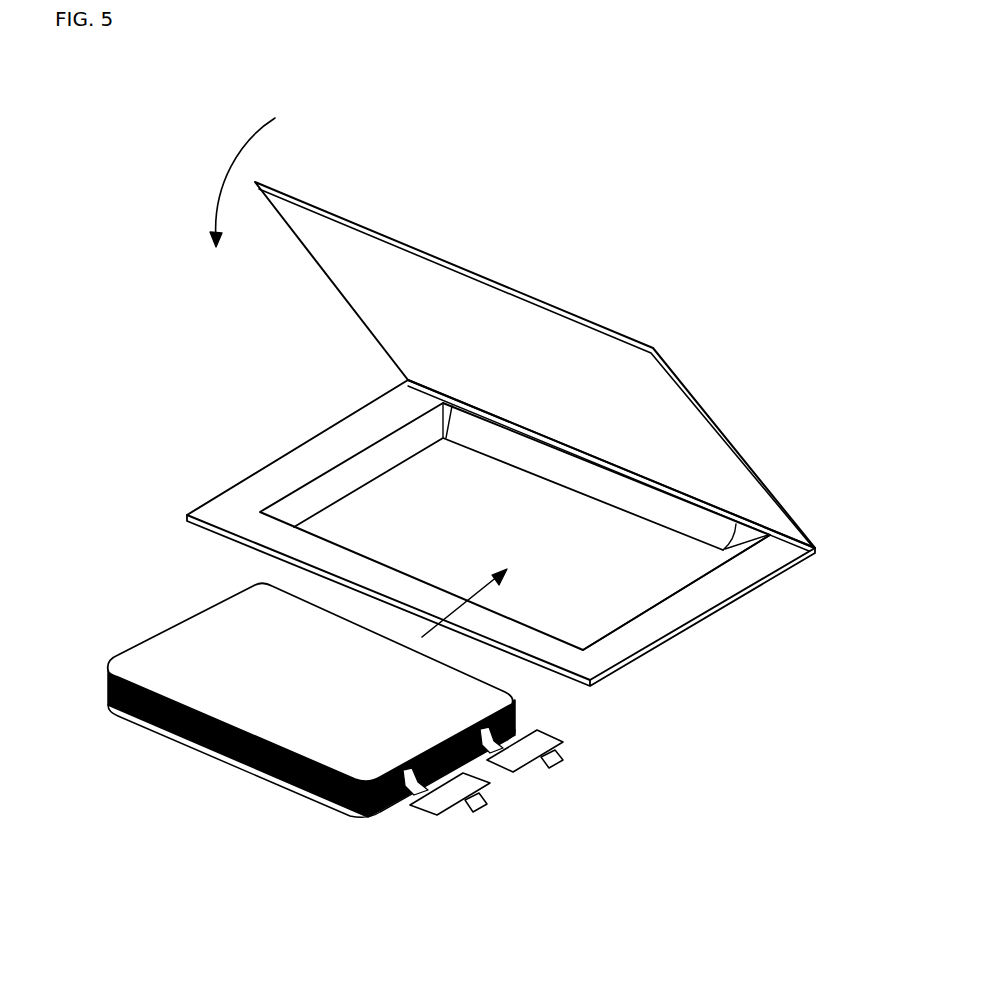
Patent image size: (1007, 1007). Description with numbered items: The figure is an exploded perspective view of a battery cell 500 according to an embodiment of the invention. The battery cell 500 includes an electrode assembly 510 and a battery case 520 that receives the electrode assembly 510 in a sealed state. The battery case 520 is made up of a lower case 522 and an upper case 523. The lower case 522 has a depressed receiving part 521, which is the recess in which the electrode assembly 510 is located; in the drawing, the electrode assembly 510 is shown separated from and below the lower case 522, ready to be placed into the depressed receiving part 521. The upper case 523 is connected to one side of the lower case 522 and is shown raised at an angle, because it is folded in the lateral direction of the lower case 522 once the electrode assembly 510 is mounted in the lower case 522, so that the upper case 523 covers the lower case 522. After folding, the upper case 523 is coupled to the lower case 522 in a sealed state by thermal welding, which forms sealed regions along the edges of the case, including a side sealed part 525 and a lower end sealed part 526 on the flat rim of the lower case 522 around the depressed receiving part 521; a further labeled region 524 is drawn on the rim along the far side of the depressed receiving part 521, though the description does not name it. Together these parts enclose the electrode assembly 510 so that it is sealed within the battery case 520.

The battery cell 500 is at (108, 117).
The electrode assembly 510 is at (177, 660).
The battery case 520 is at (767, 450).
The depressed receiving part 521 is at (613, 617).
The lower case 522 is at (630, 658).
The upper case 523 is at (505, 282).
The side wall 524 is at (727, 582).
The side sealed part 525 is at (302, 548).
The lower end sealed part 526 is at (333, 445).